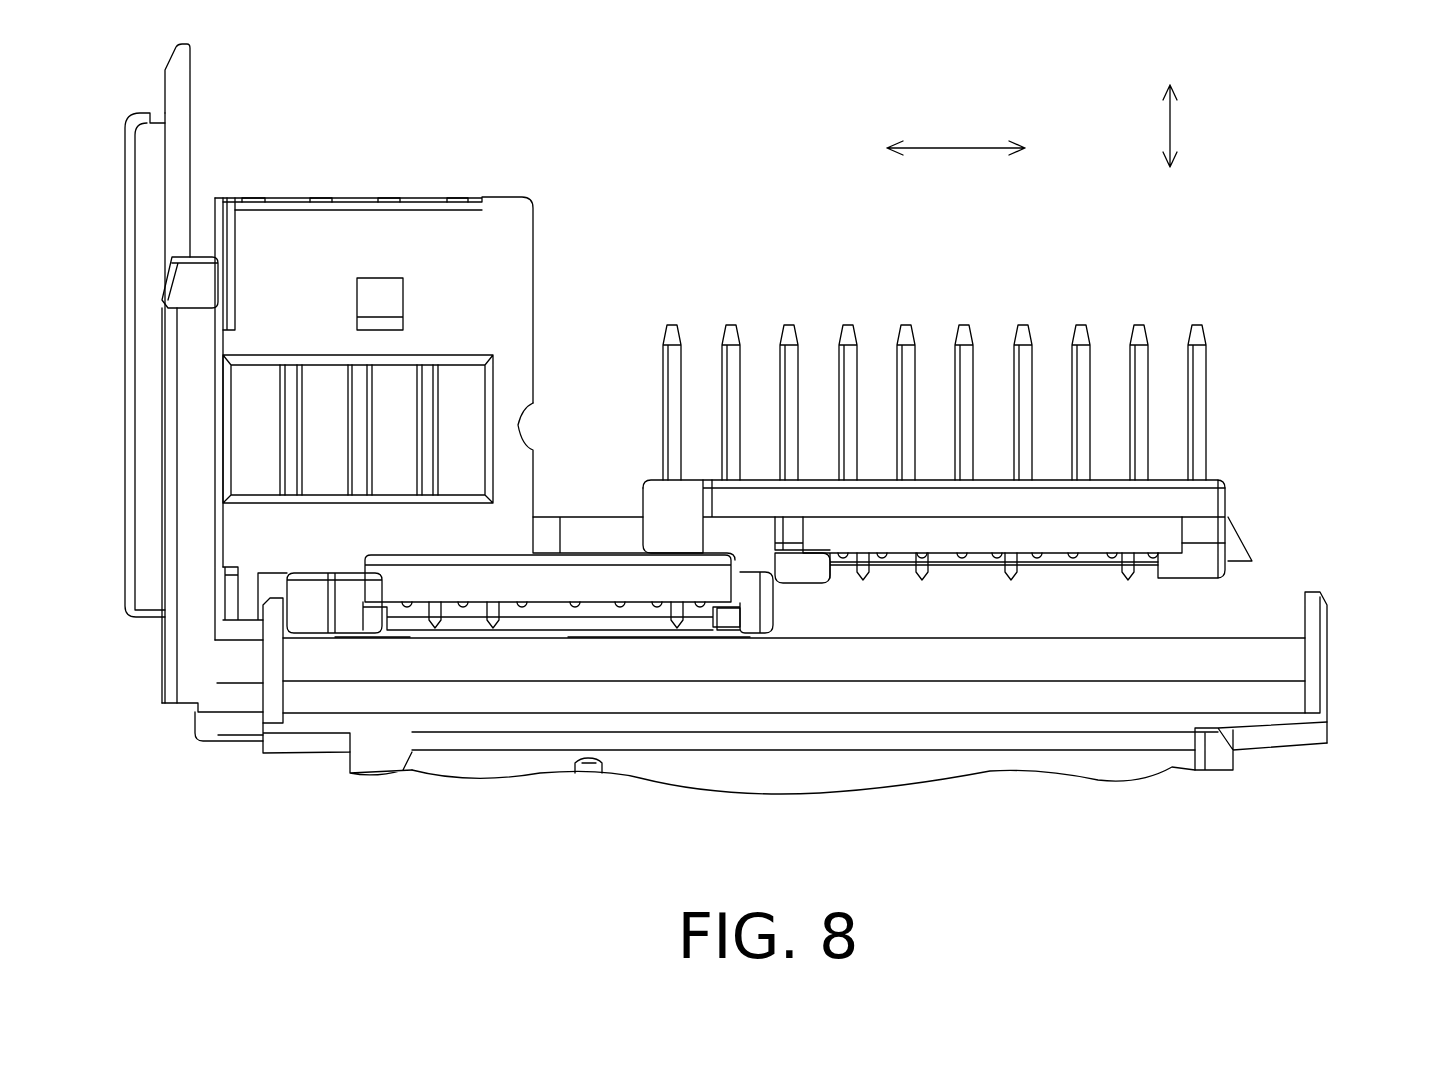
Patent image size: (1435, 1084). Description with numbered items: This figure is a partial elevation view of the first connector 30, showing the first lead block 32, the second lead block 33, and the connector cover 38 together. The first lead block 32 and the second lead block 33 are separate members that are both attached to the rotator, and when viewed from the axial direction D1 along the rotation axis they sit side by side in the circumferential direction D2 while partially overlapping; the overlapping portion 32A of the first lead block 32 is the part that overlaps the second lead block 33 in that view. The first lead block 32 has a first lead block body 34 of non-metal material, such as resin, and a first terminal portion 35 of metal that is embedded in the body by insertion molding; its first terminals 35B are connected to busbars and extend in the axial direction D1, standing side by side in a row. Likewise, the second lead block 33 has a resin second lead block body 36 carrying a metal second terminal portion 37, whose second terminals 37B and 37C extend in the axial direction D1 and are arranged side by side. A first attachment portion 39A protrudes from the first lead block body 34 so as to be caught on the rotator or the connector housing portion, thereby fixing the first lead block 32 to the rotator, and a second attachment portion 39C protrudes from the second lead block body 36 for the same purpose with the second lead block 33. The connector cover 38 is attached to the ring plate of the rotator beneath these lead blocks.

The first connector 30 is at (603, 195).
The first lead block 32 is at (985, 548).
The overlapping portion 32A is at (750, 553).
The second lead block 33 is at (475, 362).
The first lead block body 34 is at (1210, 493).
The first terminal portion 35 is at (959, 365).
The first terminals 35B is at (848, 322).
The second lead block body 36 is at (696, 580).
The second terminal portion 37 is at (655, 345).
The second terminals 37B is at (674, 323).
The second terminals 37C is at (322, 198).
The connector cover 38 is at (1338, 682).
The first attachment portion 39A is at (1237, 550).
The second attachment portion 39C is at (368, 296).
The axial direction D1 is at (1172, 130).
The circumferential direction D2 is at (975, 147).